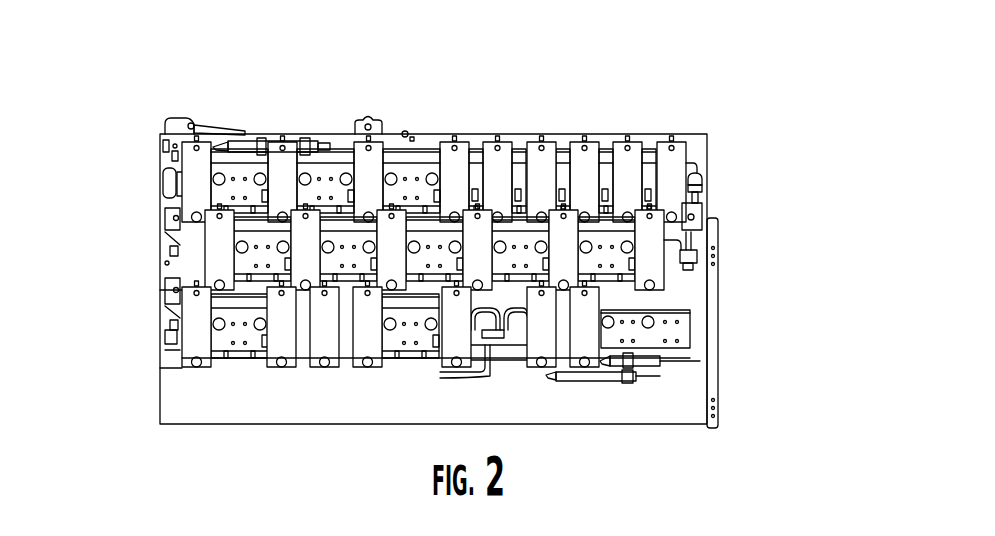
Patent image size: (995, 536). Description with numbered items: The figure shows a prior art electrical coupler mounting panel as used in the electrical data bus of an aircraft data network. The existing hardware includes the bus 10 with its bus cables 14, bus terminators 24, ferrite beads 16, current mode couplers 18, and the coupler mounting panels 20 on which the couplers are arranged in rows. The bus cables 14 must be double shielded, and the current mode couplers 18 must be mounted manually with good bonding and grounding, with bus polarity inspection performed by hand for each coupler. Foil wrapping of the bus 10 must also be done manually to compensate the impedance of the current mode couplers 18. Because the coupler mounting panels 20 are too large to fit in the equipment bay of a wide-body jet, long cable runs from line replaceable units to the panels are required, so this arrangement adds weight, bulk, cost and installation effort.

The bus 10 is at (467, 258).
The bus cables 14 is at (420, 155).
The ferrite beads 16 is at (686, 255).
The current mode couplers 18 is at (549, 150).
The coupler mounting panels 20 is at (388, 236).
The bus terminators 24 is at (283, 138).